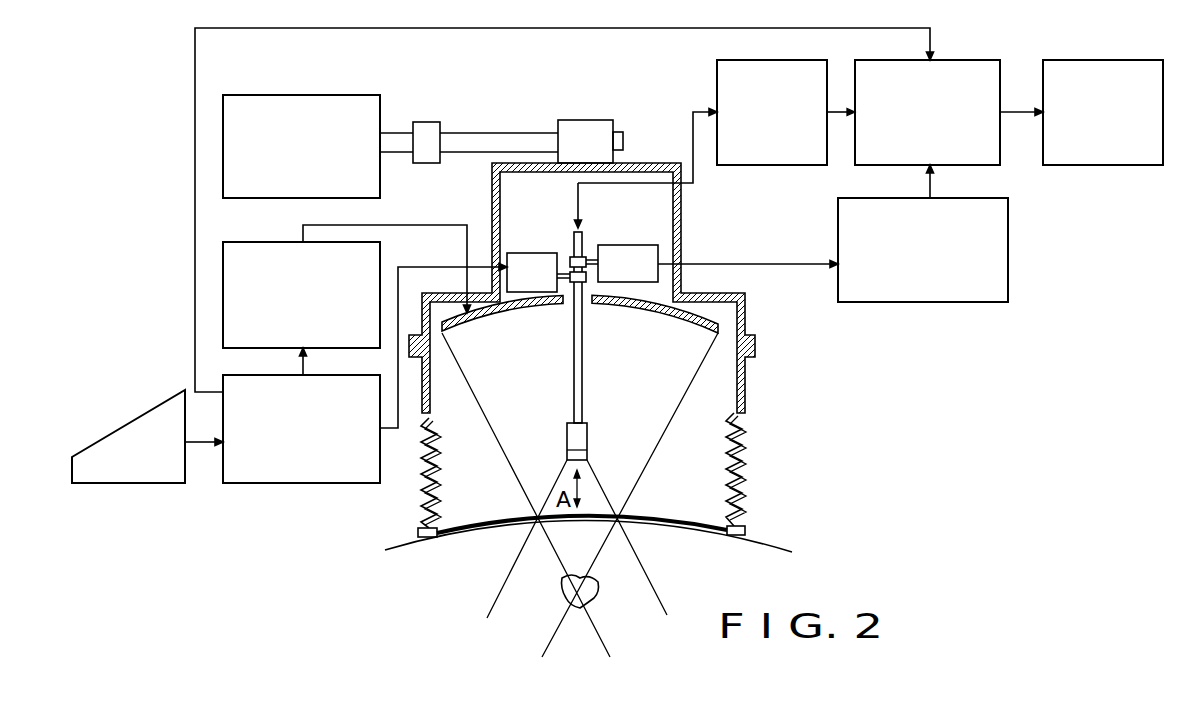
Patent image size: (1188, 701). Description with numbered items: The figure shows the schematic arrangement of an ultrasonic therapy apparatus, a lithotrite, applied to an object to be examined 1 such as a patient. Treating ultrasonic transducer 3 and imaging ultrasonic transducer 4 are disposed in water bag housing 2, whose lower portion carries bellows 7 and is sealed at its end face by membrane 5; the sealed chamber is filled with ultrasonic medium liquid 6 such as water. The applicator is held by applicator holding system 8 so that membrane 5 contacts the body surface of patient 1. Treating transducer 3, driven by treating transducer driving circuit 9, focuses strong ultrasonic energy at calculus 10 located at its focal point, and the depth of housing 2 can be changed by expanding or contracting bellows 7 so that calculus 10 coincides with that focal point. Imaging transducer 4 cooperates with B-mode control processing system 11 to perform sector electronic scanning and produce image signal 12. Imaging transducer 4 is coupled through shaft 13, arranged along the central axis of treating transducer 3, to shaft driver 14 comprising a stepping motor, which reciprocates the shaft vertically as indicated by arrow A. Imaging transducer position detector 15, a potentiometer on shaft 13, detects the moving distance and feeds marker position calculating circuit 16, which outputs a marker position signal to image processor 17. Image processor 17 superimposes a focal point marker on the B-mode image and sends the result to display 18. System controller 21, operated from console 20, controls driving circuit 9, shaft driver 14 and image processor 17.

The object to be examined 1 is at (758, 550).
The water bag housing 2 is at (745, 383).
The treating ultrasonic transducer 3 is at (668, 325).
The imaging ultrasonic transducer 4 is at (587, 446).
The membrane 5 is at (665, 517).
The ultrasonic medium liquid 6 is at (447, 498).
The bellows 7 is at (743, 474).
The applicator holding system 8 is at (338, 95).
The treating transducer driving circuit 9 is at (257, 242).
The calculus 10 is at (590, 603).
The B-mode control processing system 11 is at (715, 75).
The image signal 12 is at (842, 110).
The shaft 13 is at (582, 345).
The shaft driver 14 is at (532, 253).
The imaging transducer position detector 15 is at (635, 245).
The marker position calculating circuit 16 is at (1010, 276).
The image processor 17 is at (987, 60).
The display 18 is at (1128, 60).
The console 20 is at (138, 485).
The system controller 21 is at (328, 485).